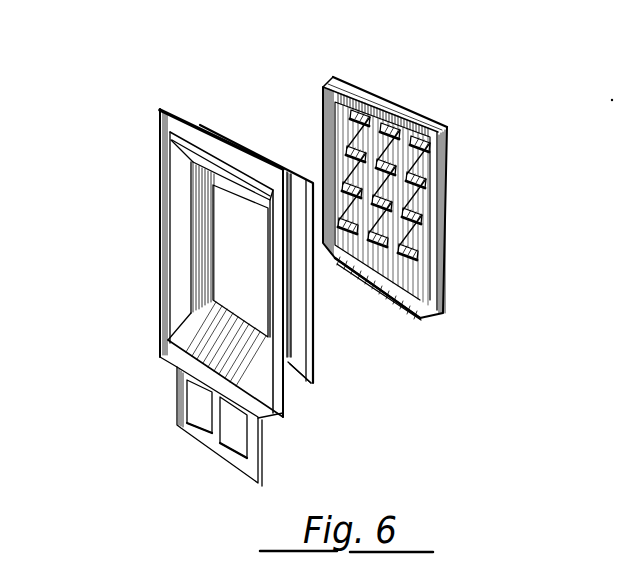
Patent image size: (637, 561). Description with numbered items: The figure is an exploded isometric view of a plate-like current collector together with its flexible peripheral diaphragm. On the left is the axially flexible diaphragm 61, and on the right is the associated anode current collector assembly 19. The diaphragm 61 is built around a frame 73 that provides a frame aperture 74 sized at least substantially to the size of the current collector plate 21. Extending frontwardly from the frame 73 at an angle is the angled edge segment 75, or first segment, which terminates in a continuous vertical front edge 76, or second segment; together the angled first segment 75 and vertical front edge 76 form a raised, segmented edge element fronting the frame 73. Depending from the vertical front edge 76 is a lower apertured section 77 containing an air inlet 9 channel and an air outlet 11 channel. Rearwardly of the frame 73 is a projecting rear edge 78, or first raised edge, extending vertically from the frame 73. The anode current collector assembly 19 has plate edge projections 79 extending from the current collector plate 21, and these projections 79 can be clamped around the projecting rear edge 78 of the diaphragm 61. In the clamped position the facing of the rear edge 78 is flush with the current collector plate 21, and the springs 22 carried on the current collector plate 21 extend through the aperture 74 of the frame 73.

The axially flexible diaphragm 61 is at (146, 143).
The vertical front edge 76 is at (163, 218).
The angled edge segment 75 is at (178, 249).
The frame 73 is at (202, 277).
The frame aperture 74 is at (241, 209).
The projecting rear edge 78 is at (313, 378).
The lower apertured section 77 is at (263, 458).
The air outlet channel 11 is at (203, 405).
The air inlet channel 9 is at (238, 437).
The anode current collector assembly 19 is at (452, 158).
The plate edge projections 79 is at (378, 298).
The current collector plate 21 is at (362, 258).
The springs 22 is at (432, 245).